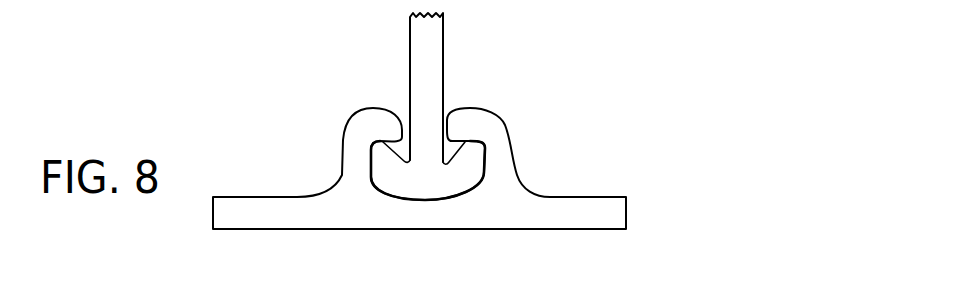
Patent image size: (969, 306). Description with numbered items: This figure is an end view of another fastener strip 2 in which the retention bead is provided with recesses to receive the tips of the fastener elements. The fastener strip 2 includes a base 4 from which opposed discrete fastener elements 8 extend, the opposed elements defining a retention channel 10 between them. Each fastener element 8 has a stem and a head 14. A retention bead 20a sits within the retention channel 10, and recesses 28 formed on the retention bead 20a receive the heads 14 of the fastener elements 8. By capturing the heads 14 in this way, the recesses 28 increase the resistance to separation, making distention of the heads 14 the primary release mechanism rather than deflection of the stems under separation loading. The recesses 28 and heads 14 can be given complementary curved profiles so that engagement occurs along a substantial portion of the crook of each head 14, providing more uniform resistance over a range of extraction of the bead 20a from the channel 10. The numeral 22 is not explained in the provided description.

The fastener strip 2 is at (199, 60).
The base 4 is at (607, 220).
The fastener elements 8 is at (503, 170).
The retention channel 10 is at (457, 193).
The head 14 is at (385, 123).
The retention bead 20a is at (423, 181).
The stem 22 is at (418, 41).
The recesses 28 is at (453, 160).